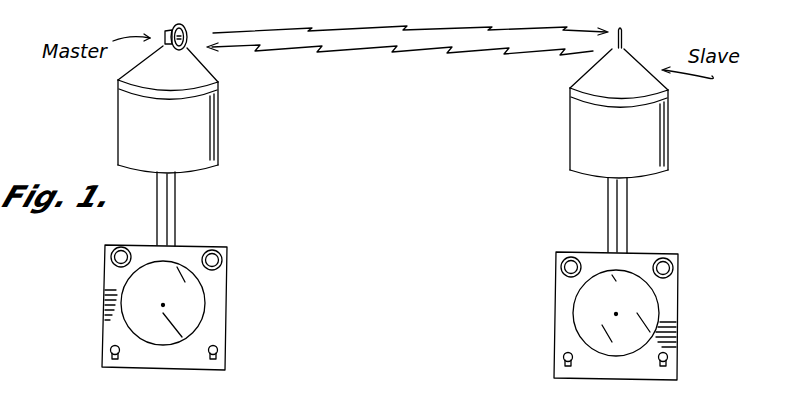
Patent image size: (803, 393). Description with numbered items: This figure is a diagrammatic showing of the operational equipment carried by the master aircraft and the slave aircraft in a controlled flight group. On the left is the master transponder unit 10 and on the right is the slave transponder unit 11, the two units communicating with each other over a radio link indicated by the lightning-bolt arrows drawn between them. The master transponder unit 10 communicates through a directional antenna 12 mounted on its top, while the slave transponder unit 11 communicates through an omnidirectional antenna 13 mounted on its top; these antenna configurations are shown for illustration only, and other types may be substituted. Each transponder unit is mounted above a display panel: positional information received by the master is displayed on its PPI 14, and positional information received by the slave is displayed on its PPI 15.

The master transponder unit 10 is at (220, 128).
The slave transponder unit 11 is at (578, 128).
The directional antenna 12 is at (186, 28).
The omnidirectional antenna 13 is at (625, 40).
The PPI 14 is at (176, 300).
The PPI 15 is at (630, 309).